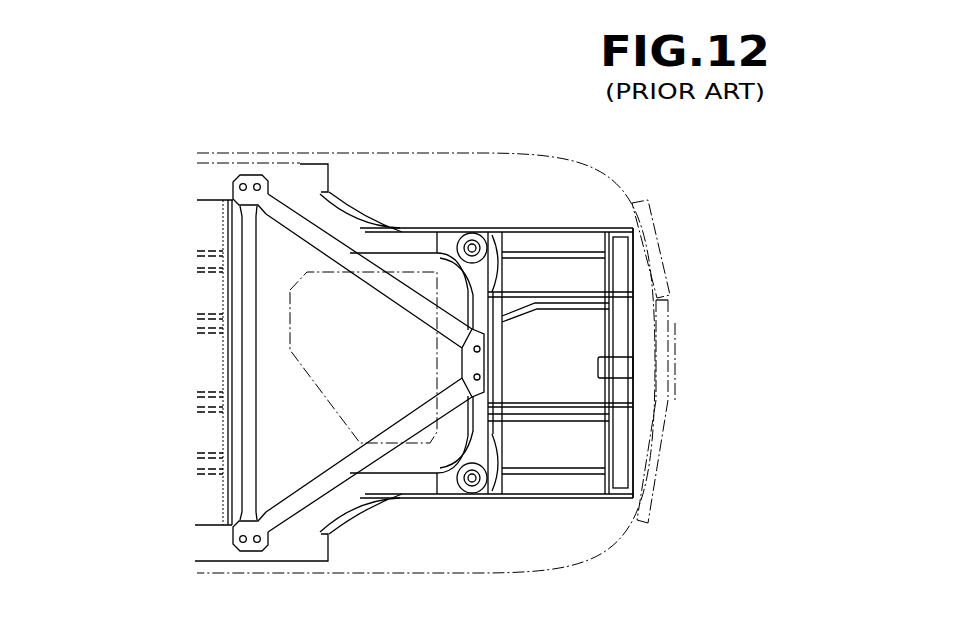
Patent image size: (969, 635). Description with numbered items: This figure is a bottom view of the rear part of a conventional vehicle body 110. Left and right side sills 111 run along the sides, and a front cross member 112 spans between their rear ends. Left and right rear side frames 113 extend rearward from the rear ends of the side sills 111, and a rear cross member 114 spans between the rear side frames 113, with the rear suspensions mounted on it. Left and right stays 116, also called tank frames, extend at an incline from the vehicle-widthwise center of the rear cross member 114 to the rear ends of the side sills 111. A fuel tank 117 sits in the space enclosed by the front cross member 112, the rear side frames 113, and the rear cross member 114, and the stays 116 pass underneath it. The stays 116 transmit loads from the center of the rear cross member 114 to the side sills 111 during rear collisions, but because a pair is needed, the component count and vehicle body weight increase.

The vehicle body 110 is at (133, 185).
The side sill 111 is at (287, 175).
The front cross member 112 is at (232, 362).
The rear side frame 113 is at (362, 229).
The rear cross member 114 is at (450, 242).
The stay 116 is at (290, 228).
The fuel tank 117 is at (315, 365).